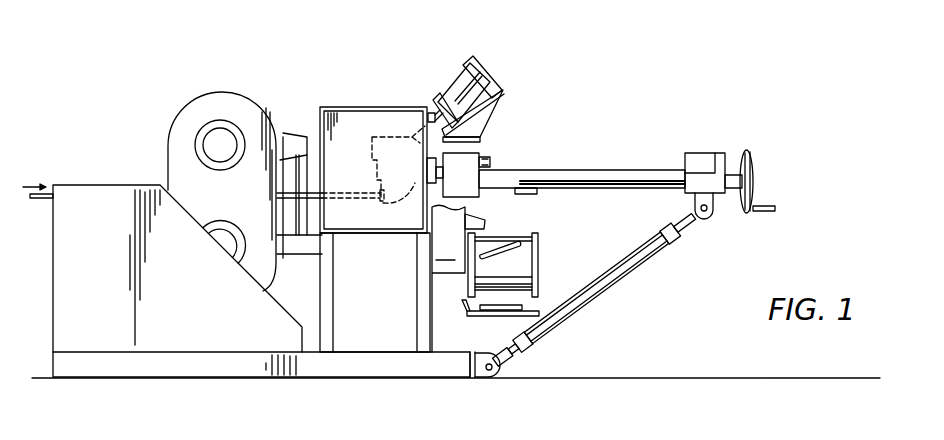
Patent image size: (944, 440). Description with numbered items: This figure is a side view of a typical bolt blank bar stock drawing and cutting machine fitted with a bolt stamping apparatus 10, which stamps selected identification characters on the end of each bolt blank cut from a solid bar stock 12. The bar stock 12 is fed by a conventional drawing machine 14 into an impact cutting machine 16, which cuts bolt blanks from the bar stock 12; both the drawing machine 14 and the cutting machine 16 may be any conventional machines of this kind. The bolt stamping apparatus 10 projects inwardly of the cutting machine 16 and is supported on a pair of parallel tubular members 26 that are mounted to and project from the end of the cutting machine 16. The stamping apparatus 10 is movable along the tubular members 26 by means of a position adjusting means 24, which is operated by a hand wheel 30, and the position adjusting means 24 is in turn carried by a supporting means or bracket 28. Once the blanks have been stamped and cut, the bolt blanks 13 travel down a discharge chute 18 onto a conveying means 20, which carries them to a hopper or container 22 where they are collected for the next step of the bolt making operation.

The bolt stamping apparatus 10 is at (446, 60).
The bar stock 12 is at (42, 200).
The bolt blanks 13 is at (506, 308).
The drawing machine 14 is at (221, 89).
The impact cutting machine 16 is at (343, 107).
The discharge chute 18 is at (482, 221).
The conveying means 20 is at (541, 244).
The hopper or container 22 is at (540, 307).
The position adjusting means 24 is at (708, 153).
The tubular members 26 is at (562, 172).
The supporting means or bracket 28 is at (626, 281).
The hand wheel 30 is at (757, 176).